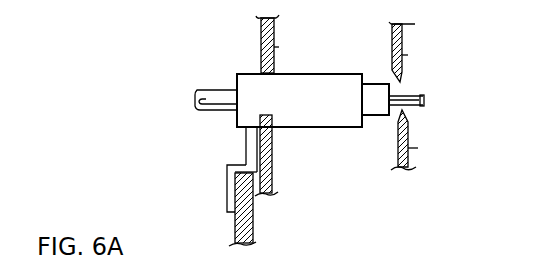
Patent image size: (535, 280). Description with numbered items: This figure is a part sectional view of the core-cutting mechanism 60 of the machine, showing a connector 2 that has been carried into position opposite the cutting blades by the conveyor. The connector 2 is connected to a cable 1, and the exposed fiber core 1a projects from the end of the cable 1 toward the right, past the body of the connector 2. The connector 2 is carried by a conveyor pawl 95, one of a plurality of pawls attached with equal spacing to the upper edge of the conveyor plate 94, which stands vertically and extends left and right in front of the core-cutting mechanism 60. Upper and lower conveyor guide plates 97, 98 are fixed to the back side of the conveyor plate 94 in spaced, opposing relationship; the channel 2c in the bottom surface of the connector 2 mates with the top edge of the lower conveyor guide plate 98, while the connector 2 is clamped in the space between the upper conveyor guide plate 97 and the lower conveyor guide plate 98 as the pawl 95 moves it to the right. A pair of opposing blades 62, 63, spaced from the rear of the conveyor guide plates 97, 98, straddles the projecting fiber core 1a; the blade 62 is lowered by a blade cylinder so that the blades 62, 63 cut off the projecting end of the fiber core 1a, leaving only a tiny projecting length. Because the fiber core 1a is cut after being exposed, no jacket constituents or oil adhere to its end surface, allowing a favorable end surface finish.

The cable 1 is at (203, 109).
The fiber core 1a is at (424, 96).
The connector 2 is at (237, 68).
The channel 2c is at (275, 130).
The core-cutting mechanism 60 is at (402, 201).
The blade 62 is at (406, 55).
The blade 63 is at (416, 148).
The conveyor plate 94 is at (253, 218).
The conveyor pawl 95 is at (226, 177).
The upper conveyor guide plate 97 is at (276, 47).
The lower conveyor guide plate 98 is at (273, 172).